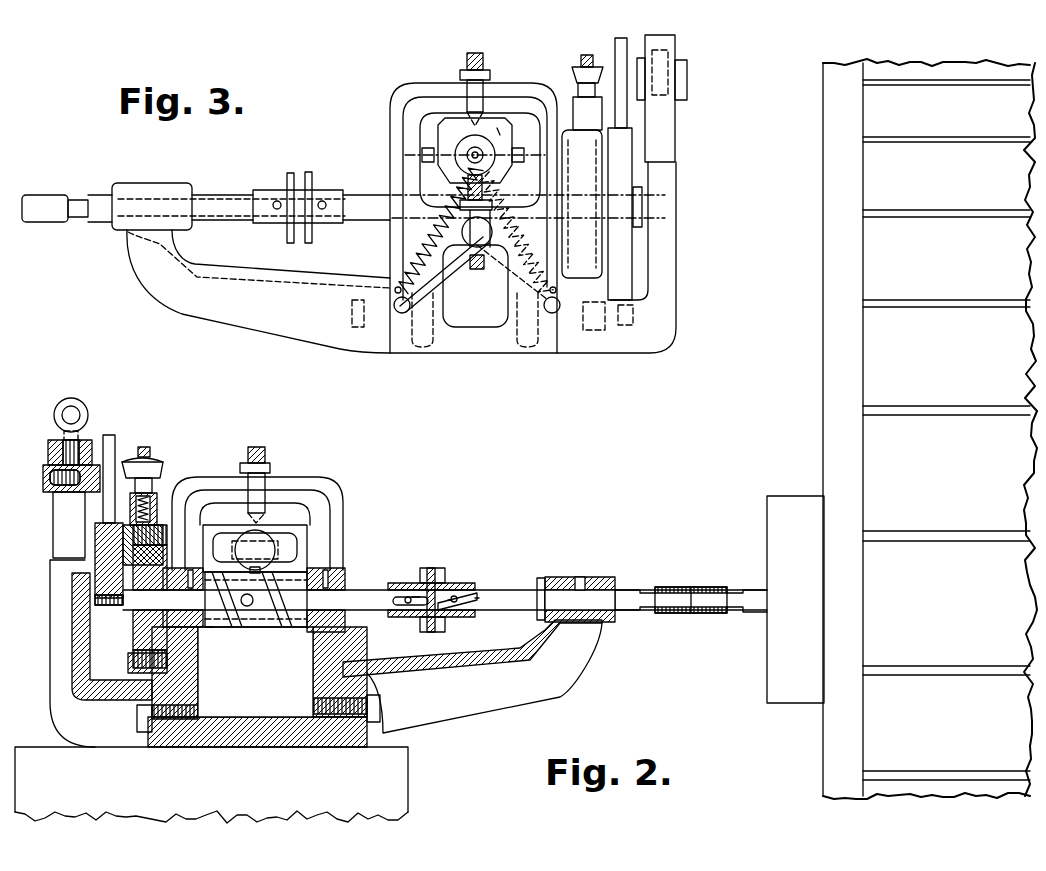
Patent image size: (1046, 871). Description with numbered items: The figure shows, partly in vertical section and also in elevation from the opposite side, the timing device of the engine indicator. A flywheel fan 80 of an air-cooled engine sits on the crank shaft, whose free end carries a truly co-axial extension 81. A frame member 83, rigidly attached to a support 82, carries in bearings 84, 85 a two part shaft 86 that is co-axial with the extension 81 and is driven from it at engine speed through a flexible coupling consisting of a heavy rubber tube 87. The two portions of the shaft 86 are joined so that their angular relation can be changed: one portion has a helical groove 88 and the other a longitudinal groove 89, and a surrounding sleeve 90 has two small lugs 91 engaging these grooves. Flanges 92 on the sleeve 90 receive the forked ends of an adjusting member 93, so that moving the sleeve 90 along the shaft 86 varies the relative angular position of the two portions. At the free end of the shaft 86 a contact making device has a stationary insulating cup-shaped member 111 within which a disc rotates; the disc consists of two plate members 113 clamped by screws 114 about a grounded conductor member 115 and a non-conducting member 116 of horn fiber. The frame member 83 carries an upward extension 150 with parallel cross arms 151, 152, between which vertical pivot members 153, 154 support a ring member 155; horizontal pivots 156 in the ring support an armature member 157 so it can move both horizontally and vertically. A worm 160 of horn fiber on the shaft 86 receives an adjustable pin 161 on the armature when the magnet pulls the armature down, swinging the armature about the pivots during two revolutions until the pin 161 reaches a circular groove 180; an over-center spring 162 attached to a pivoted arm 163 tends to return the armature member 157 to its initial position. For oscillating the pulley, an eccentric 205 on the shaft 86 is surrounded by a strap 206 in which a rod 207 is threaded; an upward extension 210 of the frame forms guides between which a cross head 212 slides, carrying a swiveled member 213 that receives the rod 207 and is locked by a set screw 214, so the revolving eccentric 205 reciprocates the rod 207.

In FIG. 2, the flywheel fan 80 is at (830, 240).
In FIG. 2, the extension 81 is at (752, 591).
In FIG. 2, the support 82 is at (398, 785).
In FIG. 3, the frame member 83 is at (662, 329).
In FIG. 2, the frame member 83 is at (493, 713).
In FIG. 2, the bearing 84 is at (591, 590).
In FIG. 2, the bearing 85 is at (338, 588).
In FIG. 2, the two part shaft 86 is at (377, 592).
In FIG. 2, the heavy rubber tube 87 is at (688, 614).
In FIG. 2, the helical groove 88 is at (454, 597).
In FIG. 2, the longitudinal groove 89 is at (420, 597).
In FIG. 2, the sleeve 90 is at (451, 599).
In FIG. 2, the lugs 91 is at (397, 604).
In FIG. 2, the flanges 92 is at (443, 568).
In FIG. 2, the adjusting member 93 is at (431, 567).
In FIG. 2, the cup-shaped member 111 is at (127, 663).
In FIG. 2, the plate members 113 is at (130, 580).
In FIG. 2, the screws 114 is at (135, 583).
In FIG. 2, the conductor member 115 is at (140, 553).
In FIG. 2, the non-conductor member 116 is at (133, 648).
In FIG. 3, the upward extension 150 is at (434, 92).
In FIG. 3, the cross arm 151 is at (501, 93).
In FIG. 3, the cross arm 152 is at (522, 227).
In FIG. 3, the vertical pivot member 153 is at (483, 56).
In FIG. 3, the vertical pivot member 154 is at (476, 265).
In FIG. 3, the ring member 155 is at (497, 128).
In FIG. 3, the horizontal pivots 156 is at (422, 153).
In FIG. 3, the armature member 157 is at (468, 150).
In FIG. 2, the armature member 157 is at (232, 537).
In FIG. 2, the worm 160 is at (255, 628).
In FIG. 2, the adjustable pin 161 is at (262, 548).
In FIG. 3, the spring 162 is at (458, 229).
In FIG. 3, the arm 163 is at (450, 265).
In FIG. 2, the circular groove 180 is at (210, 630).
In FIG. 2, the eccentric 205 is at (117, 565).
In FIG. 2, the strap 206 is at (112, 632).
In FIG. 2, the rod 207 is at (110, 440).
In FIG. 2, the upward extension 210 is at (62, 515).
In FIG. 2, the cross head 212 is at (50, 442).
In FIG. 2, the swiveled member 213 is at (56, 472).
In FIG. 2, the set screw 214 is at (125, 470).